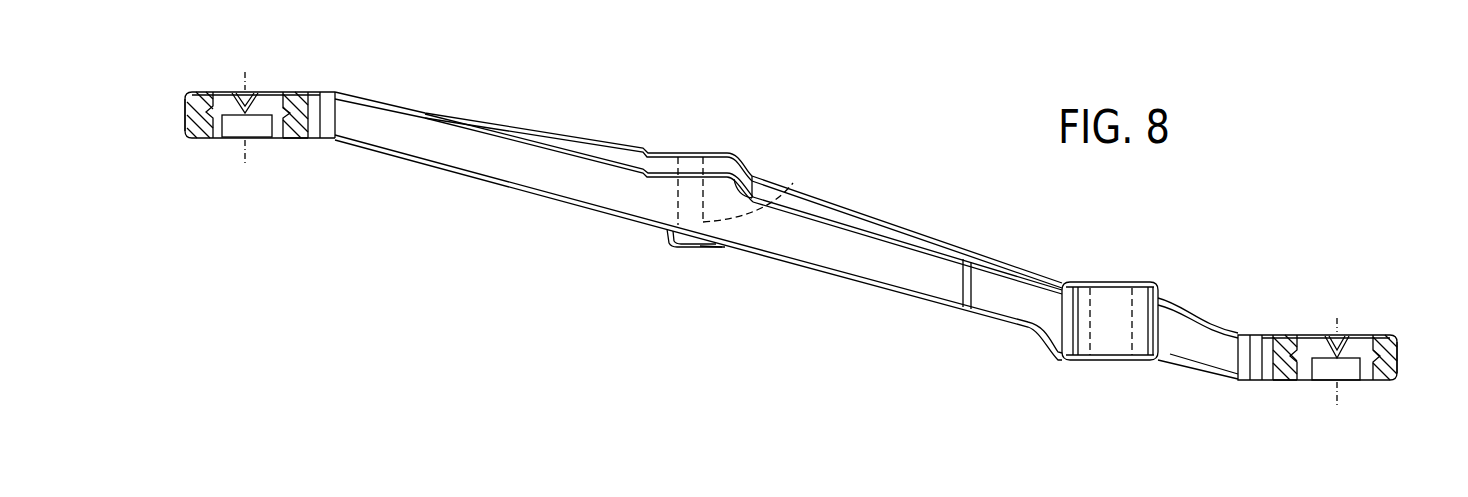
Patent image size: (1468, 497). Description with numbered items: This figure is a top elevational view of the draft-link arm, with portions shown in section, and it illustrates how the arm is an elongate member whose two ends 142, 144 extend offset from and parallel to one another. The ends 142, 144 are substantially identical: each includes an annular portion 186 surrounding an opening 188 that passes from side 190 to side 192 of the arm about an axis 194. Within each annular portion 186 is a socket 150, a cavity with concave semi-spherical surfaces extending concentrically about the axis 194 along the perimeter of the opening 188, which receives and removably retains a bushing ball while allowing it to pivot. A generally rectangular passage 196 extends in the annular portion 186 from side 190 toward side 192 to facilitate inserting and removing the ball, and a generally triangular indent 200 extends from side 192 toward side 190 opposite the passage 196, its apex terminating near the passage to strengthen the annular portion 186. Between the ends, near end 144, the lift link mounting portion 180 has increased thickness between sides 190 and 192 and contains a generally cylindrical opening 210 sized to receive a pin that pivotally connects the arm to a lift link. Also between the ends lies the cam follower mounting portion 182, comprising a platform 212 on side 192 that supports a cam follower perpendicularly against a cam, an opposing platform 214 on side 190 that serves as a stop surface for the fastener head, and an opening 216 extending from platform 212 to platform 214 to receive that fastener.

The end 142 is at (198, 90).
The end 144 is at (1387, 384).
The socket 150 is at (283, 112).
The lift link mounting portion 180 is at (1158, 285).
The cam follower mounting portion 182 is at (666, 243).
The annular portion 186 is at (190, 139).
The opening 188 is at (280, 139).
The side 190 is at (513, 197).
The side 192 is at (544, 126).
The axis 194 is at (248, 80).
The passage 196 is at (241, 132).
The indent 200 is at (243, 100).
The opening 210 is at (1130, 344).
The platform 212 is at (690, 153).
The platform 214 is at (706, 244).
The opening 216 is at (783, 199).